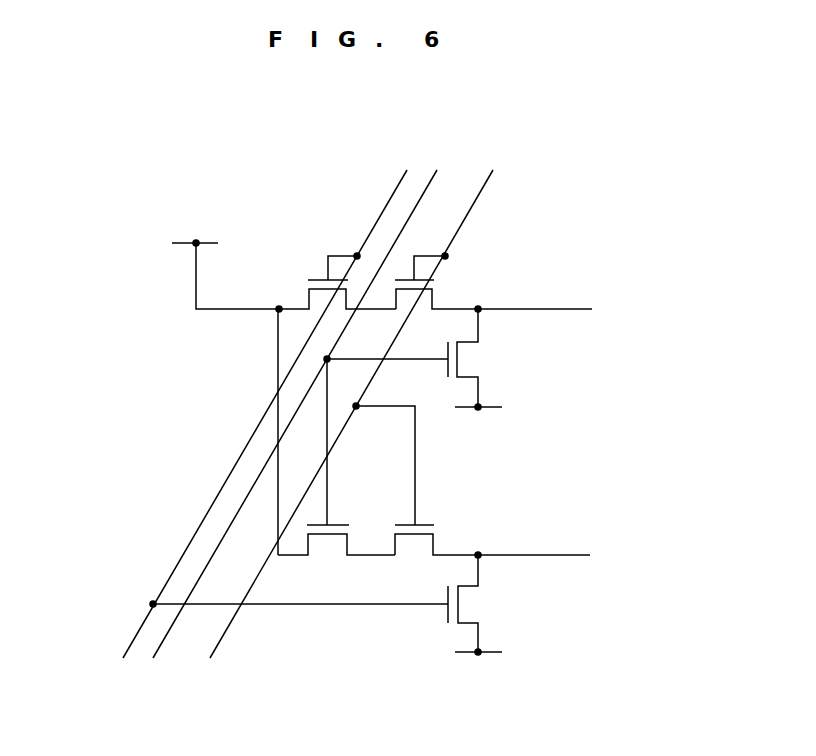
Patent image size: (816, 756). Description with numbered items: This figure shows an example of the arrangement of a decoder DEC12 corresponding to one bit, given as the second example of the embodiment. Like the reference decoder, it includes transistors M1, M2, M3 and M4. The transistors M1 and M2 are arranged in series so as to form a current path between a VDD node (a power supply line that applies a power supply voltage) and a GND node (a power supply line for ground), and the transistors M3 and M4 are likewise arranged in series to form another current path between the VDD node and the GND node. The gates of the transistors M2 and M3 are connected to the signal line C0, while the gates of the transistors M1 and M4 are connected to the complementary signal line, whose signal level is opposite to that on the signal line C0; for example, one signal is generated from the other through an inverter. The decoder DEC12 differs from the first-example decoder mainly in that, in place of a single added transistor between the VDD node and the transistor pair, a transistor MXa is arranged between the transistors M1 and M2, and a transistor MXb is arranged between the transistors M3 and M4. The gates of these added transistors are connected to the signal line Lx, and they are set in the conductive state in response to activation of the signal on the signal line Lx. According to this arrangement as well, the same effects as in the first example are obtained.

The transistor M1 is at (337, 281).
The transistor MXa is at (442, 285).
The transistor M2 is at (421, 358).
The transistor M3 is at (336, 555).
The transistor MXb is at (434, 555).
The transistor M4 is at (334, 603).
The VDD node VDD is at (226, 262).
The GND node GND is at (478, 547).
The node na is at (553, 309).
The node nb is at (553, 555).
The signal line C0 is at (287, 429).
The signal line LX Lx is at (341, 429).
The decoder DEC1_2 DEC12 is at (568, 675).